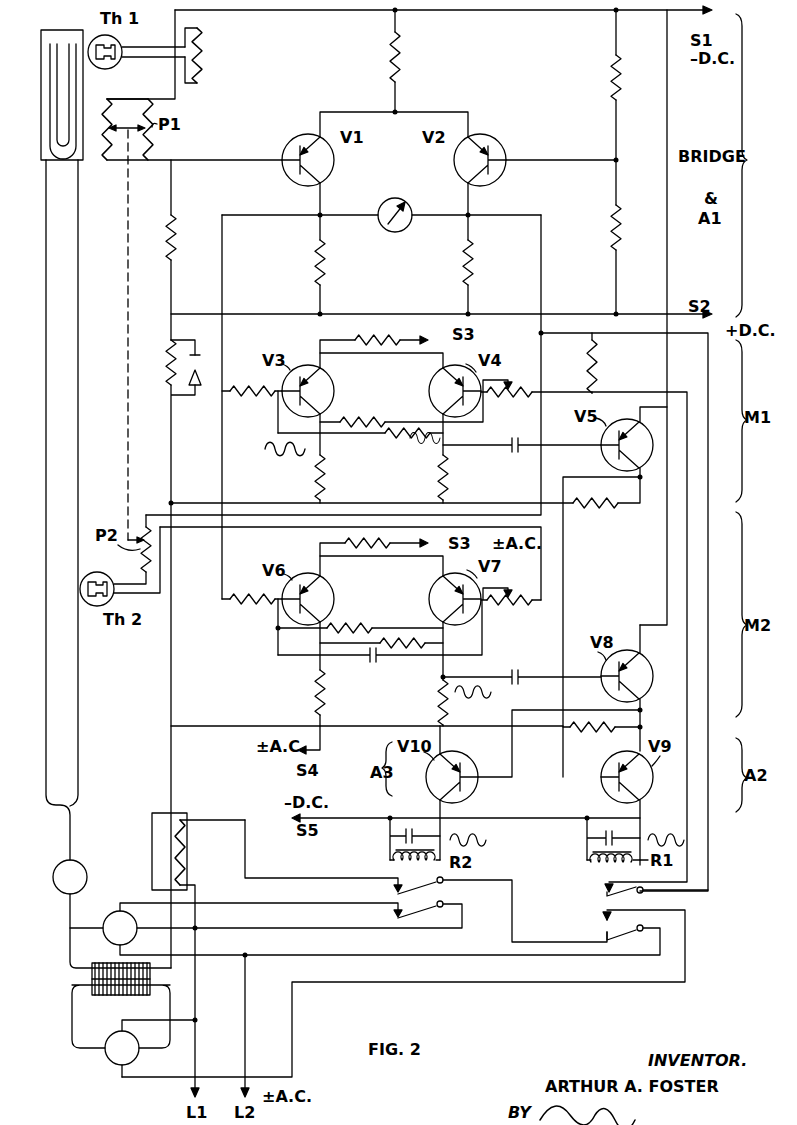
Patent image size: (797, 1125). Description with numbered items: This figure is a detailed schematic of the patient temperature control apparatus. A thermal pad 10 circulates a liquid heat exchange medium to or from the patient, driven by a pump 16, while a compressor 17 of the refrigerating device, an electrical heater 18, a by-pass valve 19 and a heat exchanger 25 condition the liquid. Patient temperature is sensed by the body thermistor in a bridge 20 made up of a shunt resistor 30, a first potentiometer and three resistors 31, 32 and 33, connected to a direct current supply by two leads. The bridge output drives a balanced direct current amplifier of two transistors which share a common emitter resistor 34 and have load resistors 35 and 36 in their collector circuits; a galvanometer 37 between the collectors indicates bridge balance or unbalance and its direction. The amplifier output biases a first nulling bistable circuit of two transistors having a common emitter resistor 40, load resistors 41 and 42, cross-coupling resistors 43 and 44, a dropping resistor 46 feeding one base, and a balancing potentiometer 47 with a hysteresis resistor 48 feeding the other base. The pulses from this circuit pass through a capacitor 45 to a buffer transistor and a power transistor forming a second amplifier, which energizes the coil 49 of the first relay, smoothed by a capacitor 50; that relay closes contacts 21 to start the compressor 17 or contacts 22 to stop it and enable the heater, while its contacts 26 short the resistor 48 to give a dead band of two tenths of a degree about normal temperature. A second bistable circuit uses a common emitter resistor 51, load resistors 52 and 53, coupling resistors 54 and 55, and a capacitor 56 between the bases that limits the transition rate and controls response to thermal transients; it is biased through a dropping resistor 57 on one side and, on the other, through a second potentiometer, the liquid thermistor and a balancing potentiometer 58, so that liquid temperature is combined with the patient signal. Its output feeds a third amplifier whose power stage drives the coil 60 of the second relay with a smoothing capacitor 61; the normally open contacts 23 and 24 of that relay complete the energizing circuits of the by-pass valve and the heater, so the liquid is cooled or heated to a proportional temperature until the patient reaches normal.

The thermal pad 10 is at (61, 30).
The pump 16 is at (52, 884).
The compressor 17 is at (112, 1062).
The electrical heater 18 is at (186, 846).
The by-pass valve 19 is at (103, 938).
The bridge 20 is at (723, 165).
The contacts 21 is at (594, 916).
The contacts 22 is at (594, 939).
The normally open contacts 23 is at (388, 916).
The normally open contacts 24 is at (388, 888).
The heat exchanger 25 is at (93, 995).
The contacts 26 is at (594, 894).
The shunt resistor 30 is at (203, 54).
The resistor 31 is at (174, 240).
The resistor 32 is at (612, 76).
The resistor 33 is at (610, 238).
The common emitter resistor 34 is at (398, 58).
The load resistor 35 is at (312, 262).
The load resistor 36 is at (474, 262).
The galvanometer 37 is at (395, 233).
The common emitter resistor 40 is at (358, 339).
The load resistor 41 is at (317, 475).
The load resistor 42 is at (448, 467).
The resistor 43 is at (404, 438).
The resistor 44 is at (376, 416).
The capacitor 45 is at (516, 454).
The dropping resistor 46 is at (260, 391).
The potentiometer 47 is at (506, 392).
The hysteresis resistor 48 is at (592, 362).
The coil 49 is at (588, 858).
The capacitor 50 is at (598, 836).
The common emitter resistor 51 is at (343, 543).
The load resistor 52 is at (308, 698).
The load resistor 53 is at (434, 708).
The resistor 54 is at (360, 616).
The resistor 55 is at (404, 630).
The capacitor 56 is at (372, 661).
The dropping resistor 57 is at (252, 604).
The potentiometer 58 is at (505, 610).
The coil 60 is at (399, 856).
The capacitor 61 is at (398, 836).